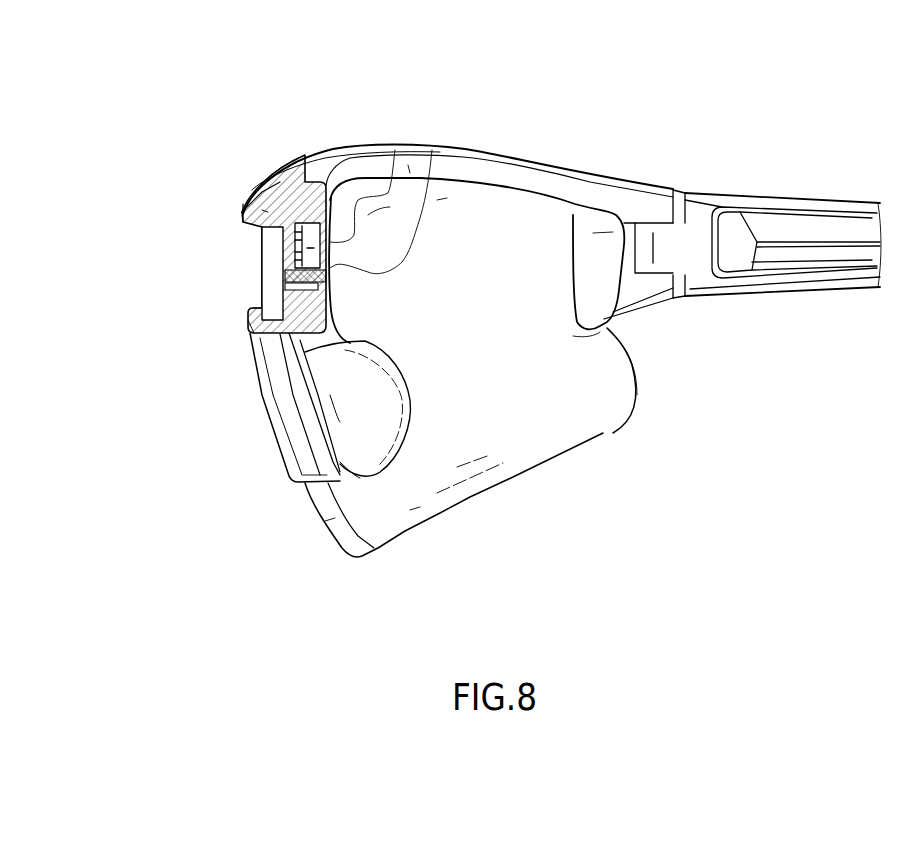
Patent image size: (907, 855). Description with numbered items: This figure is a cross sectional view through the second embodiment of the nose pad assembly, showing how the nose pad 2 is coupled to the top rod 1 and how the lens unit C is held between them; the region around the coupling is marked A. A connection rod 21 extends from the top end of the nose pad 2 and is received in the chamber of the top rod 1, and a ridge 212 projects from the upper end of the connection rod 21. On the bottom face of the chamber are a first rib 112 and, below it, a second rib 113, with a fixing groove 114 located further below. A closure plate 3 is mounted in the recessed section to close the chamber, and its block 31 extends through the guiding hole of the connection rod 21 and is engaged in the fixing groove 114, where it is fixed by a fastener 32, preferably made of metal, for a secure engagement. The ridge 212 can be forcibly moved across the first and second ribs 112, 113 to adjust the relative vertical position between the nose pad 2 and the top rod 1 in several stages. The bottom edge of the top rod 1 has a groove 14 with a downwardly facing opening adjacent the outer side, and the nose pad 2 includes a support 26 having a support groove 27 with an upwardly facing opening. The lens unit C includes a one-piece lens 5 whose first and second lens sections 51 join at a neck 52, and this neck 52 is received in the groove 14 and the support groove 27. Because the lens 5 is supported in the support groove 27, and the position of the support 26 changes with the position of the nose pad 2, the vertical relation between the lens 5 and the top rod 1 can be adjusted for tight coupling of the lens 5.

The top rod 1 is at (493, 152).
The nose pad 2 is at (257, 447).
The closure plate 3 is at (395, 150).
The lens 5 is at (620, 440).
The groove 14 is at (243, 203).
The connection rod 21 is at (306, 183).
The support 26 is at (275, 362).
The support groove 27 is at (262, 362).
The block 31 is at (252, 308).
The fastener 32 is at (432, 150).
The lens section 51 is at (633, 398).
The neck 52 is at (286, 270).
The first rib 112 is at (268, 211).
The second rib 113 is at (262, 247).
The fixing groove 114 is at (285, 297).
The ridge 212 is at (262, 183).
The region A is at (348, 77).
The lens unit C is at (590, 488).